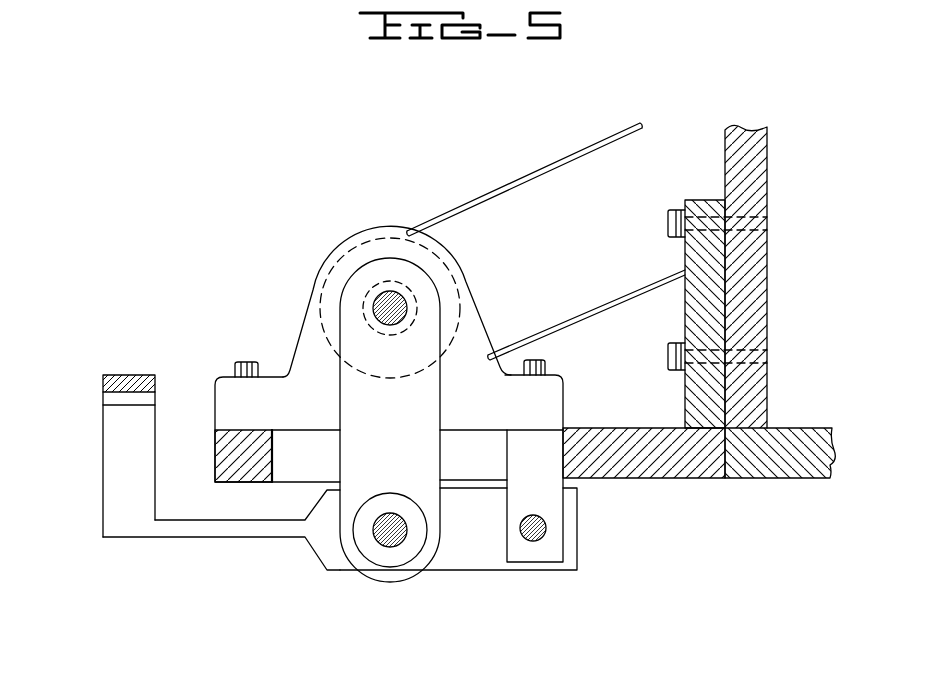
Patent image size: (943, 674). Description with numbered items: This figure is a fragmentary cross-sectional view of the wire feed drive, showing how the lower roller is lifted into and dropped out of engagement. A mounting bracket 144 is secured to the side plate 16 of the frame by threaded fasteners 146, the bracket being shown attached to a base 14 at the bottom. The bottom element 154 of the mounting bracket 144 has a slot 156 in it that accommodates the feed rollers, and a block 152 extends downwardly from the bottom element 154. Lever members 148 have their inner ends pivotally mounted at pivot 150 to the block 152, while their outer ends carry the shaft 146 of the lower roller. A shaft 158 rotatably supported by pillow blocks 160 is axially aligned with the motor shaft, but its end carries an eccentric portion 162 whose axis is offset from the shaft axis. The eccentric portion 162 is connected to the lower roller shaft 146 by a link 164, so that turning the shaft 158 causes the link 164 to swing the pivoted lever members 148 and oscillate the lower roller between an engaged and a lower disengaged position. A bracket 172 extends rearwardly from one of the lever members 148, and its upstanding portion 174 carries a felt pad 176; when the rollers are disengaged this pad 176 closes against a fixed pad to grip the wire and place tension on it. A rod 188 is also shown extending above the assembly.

The base plate 14 is at (773, 442).
The side plate 16 is at (757, 253).
The mounting bracket 144 is at (685, 258).
The threaded fasteners 146 is at (668, 222).
The lever members 148 is at (458, 558).
The pivot 150 is at (547, 530).
The block 152 is at (547, 473).
The bottom element 154 is at (688, 470).
The slot 156 is at (277, 457).
The shaft 158 is at (476, 306).
The pillow blocks 160 is at (305, 333).
The eccentric portion 162 is at (400, 291).
The link 164 is at (406, 434).
The bracket 172 is at (200, 530).
The upstanding portion 174 is at (113, 503).
The felt pad 176 is at (103, 400).
The rod 188 is at (540, 165).